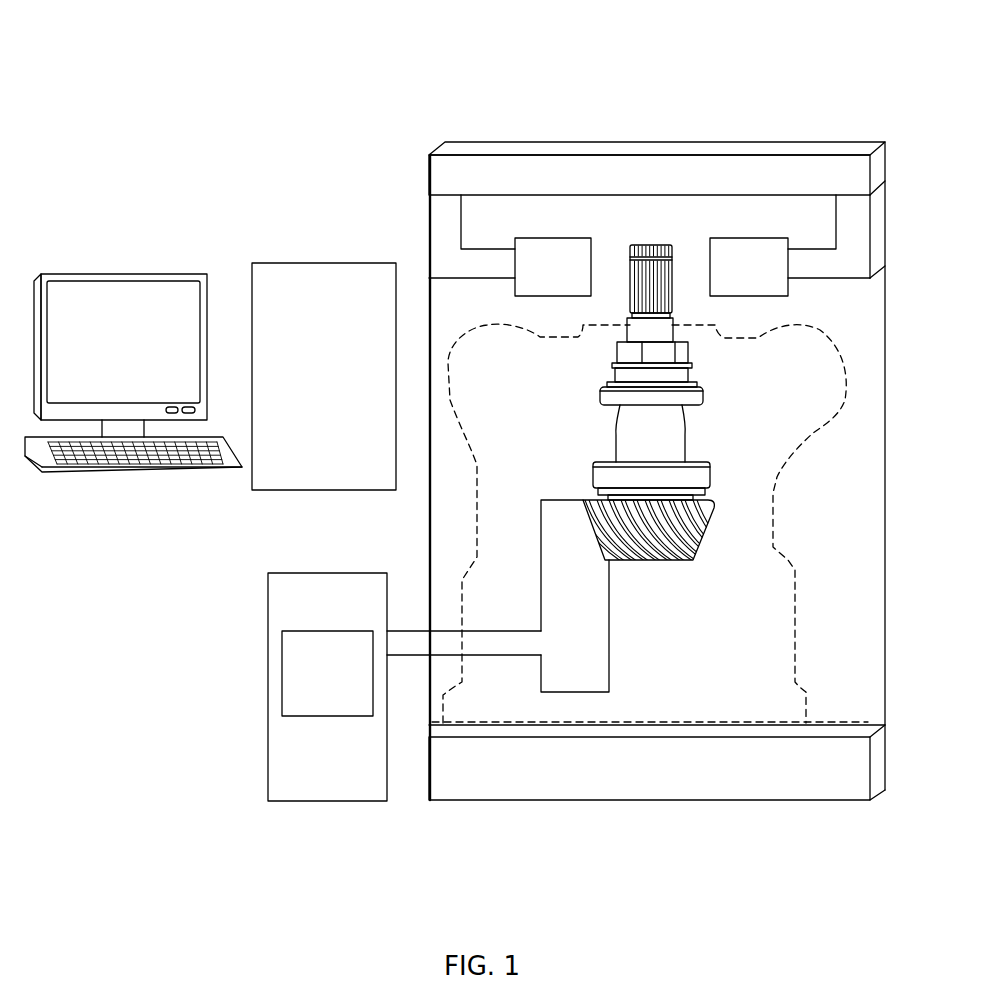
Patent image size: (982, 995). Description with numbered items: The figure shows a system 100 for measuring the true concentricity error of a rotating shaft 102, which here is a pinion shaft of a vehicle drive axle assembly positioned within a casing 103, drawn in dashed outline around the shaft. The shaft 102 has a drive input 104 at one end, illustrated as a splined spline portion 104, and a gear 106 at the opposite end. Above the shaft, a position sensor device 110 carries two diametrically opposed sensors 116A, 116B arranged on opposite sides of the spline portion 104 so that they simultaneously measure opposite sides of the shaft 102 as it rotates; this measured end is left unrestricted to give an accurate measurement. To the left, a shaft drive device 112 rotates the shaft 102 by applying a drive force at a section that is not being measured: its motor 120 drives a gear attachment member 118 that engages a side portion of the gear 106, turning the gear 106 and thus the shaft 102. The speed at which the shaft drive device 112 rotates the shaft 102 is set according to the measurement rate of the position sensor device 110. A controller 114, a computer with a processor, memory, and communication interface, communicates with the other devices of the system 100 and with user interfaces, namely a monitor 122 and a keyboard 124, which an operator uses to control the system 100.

The system 100 is at (303, 76).
The shaft 102 is at (700, 430).
The casing 103 is at (793, 632).
The drive input 104 is at (672, 277).
The gear 106 is at (697, 537).
The position sensor device 110 is at (487, 152).
The shaft drive device 112 is at (268, 747).
The controller 114 is at (309, 263).
The sensor 116A is at (537, 246).
The sensor 116B is at (772, 250).
The gear attachment member 118 is at (488, 657).
The motor 120 is at (282, 666).
The monitor 122 is at (112, 274).
The keyboard 124 is at (110, 472).